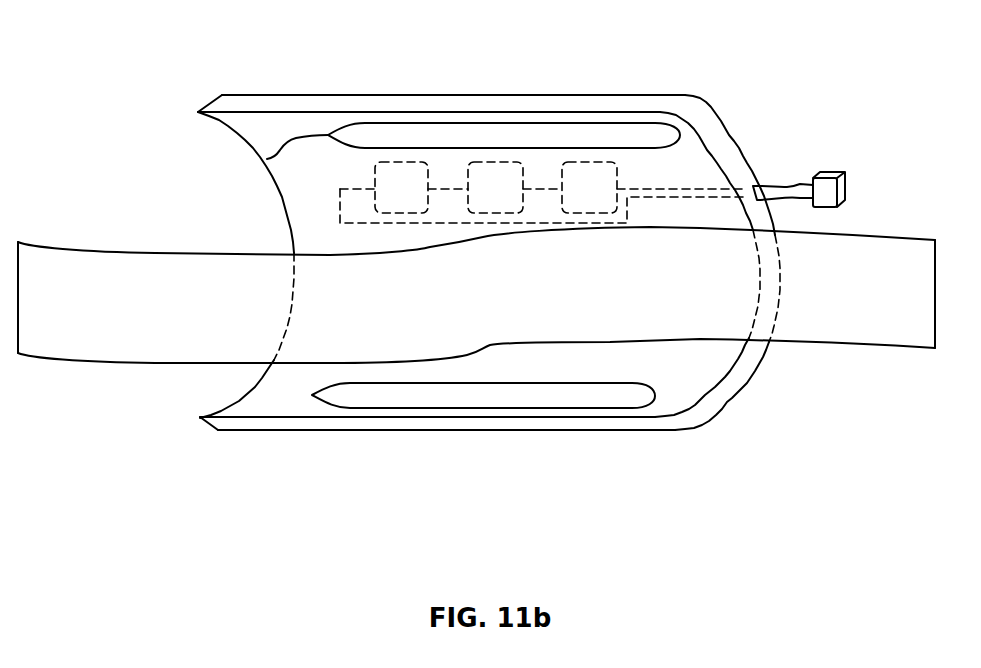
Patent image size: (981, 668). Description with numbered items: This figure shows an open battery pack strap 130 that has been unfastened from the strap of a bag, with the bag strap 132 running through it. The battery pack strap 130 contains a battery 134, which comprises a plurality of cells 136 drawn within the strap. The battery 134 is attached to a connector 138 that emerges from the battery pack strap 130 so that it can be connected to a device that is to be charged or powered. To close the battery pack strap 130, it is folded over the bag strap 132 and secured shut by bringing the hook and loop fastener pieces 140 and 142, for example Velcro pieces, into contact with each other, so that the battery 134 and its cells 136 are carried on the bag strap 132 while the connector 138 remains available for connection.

The battery pack strap 130 is at (232, 95).
The bag strap 132 is at (161, 315).
The battery 134 is at (690, 112).
The cells 136 is at (398, 202).
The connector 138 is at (829, 176).
The hook and loop fastener piece 140 is at (573, 408).
The hook and loop fastener piece 142 is at (267, 159).